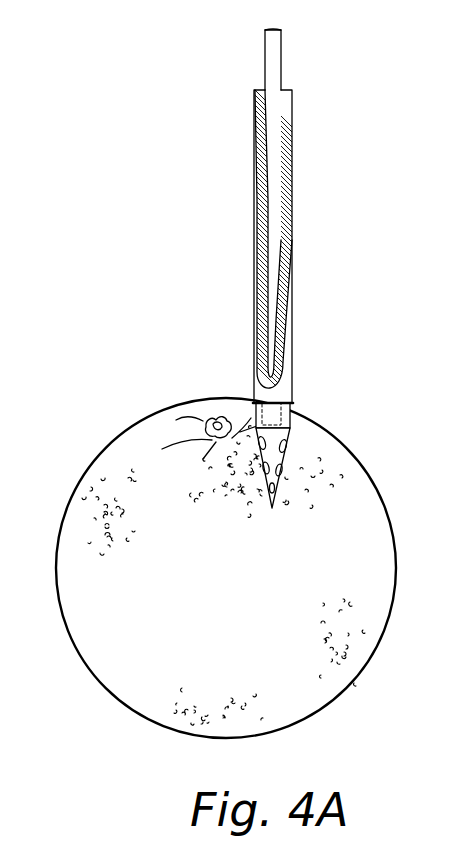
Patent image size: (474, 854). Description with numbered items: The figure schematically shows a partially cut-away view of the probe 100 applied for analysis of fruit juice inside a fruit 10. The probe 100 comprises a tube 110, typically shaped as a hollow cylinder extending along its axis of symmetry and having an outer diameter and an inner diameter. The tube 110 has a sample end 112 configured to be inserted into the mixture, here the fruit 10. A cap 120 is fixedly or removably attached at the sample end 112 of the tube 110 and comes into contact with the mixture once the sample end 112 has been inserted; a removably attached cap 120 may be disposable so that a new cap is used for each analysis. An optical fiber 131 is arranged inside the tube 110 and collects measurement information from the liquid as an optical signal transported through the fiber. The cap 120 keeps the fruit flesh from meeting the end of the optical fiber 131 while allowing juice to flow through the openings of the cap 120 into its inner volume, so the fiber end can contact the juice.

The fruit 10 is at (115, 473).
The probe 100 is at (277, 262).
The tube 110 is at (252, 168).
The sample end 112 is at (292, 387).
The cap 120 is at (292, 312).
The optical fiber 131 is at (285, 447).